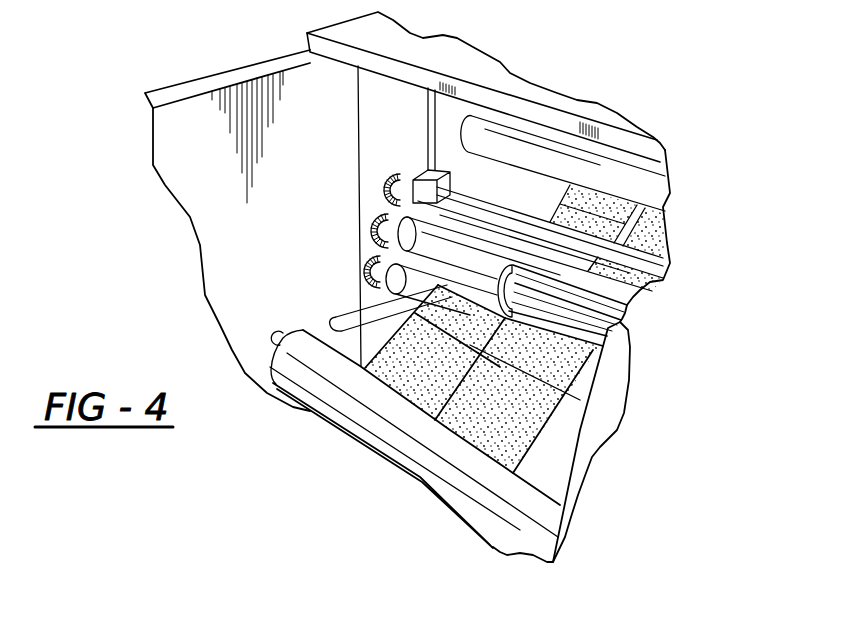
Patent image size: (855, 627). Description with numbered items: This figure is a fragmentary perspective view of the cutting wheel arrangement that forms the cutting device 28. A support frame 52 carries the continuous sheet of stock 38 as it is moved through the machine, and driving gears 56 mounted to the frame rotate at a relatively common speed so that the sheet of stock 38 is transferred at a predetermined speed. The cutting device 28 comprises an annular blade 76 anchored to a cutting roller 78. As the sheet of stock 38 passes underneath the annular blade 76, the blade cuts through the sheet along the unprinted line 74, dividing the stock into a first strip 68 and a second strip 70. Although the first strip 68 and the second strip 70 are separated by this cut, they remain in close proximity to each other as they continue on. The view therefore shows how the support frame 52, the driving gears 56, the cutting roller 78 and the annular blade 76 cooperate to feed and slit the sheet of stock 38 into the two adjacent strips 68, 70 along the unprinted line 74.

The cutting device 28 is at (644, 323).
The sheet of stock 38 is at (550, 420).
The support frame 52 is at (193, 112).
The driving gears 56 is at (383, 257).
The first strip 68 is at (405, 365).
The second strip 70 is at (493, 443).
The unprinted line 74 is at (447, 400).
The annular blade 76 is at (495, 288).
The cutting roller 78 is at (410, 230).